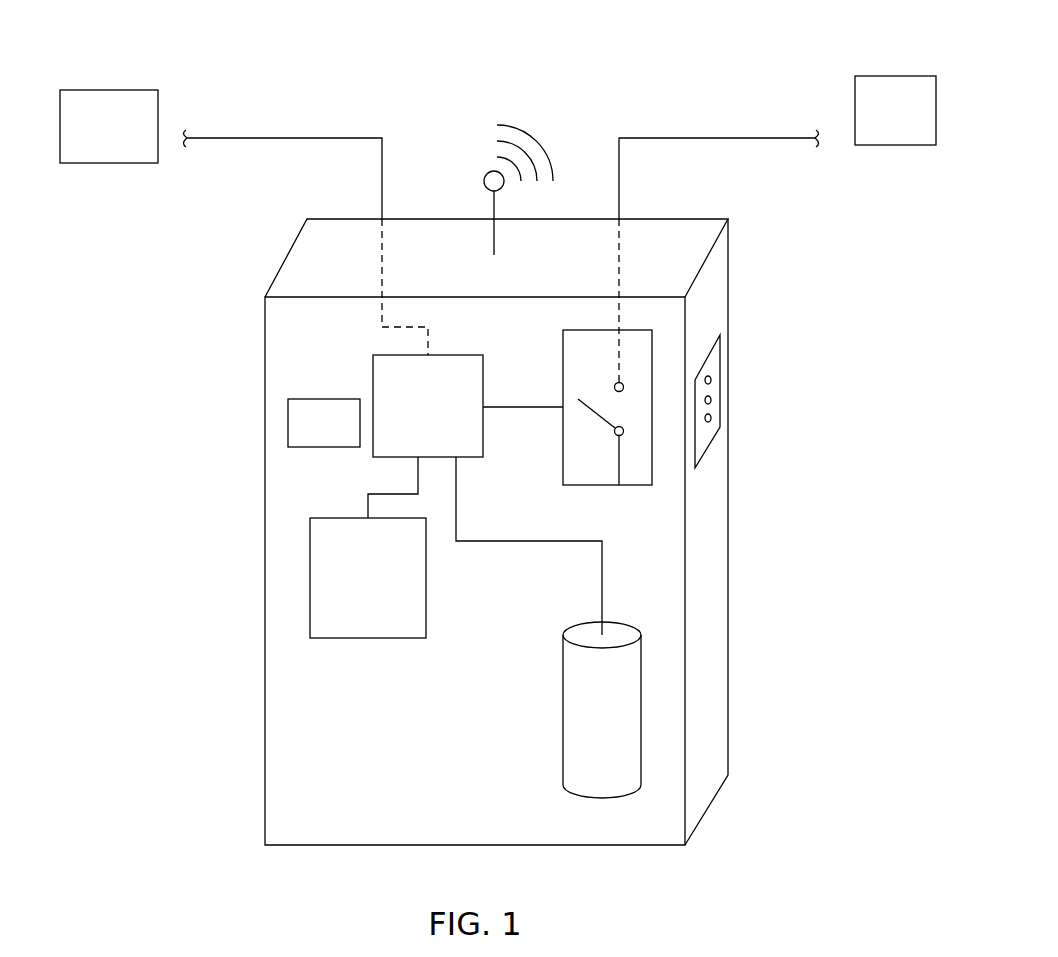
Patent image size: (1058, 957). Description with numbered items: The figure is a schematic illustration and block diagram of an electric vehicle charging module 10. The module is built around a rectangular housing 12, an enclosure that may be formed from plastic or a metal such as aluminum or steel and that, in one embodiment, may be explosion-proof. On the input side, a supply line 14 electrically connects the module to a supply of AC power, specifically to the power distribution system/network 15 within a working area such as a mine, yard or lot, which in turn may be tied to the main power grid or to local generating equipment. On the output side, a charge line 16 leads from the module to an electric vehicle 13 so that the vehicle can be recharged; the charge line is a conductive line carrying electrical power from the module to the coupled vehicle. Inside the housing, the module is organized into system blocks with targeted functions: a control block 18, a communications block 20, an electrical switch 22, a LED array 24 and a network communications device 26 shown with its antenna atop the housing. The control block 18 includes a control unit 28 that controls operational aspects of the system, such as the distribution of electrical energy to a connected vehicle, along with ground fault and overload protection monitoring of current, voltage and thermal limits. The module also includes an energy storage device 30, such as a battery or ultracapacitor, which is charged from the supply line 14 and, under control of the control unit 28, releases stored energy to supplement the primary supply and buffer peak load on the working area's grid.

The electric vehicle charging module 10 is at (835, 206).
The rectangular housing 12 is at (265, 753).
The electric vehicle 13 is at (895, 76).
The supply line 14 is at (285, 137).
The power distribution system/network 15 is at (112, 90).
The charge line 16 is at (725, 137).
The control block 18 is at (373, 362).
The communications block 20 is at (310, 578).
The electrical switch 22 is at (635, 488).
The LED array 24 is at (715, 388).
The network communications device 26 is at (484, 180).
The control unit 28 is at (288, 417).
The energy storage device 30 is at (563, 730).